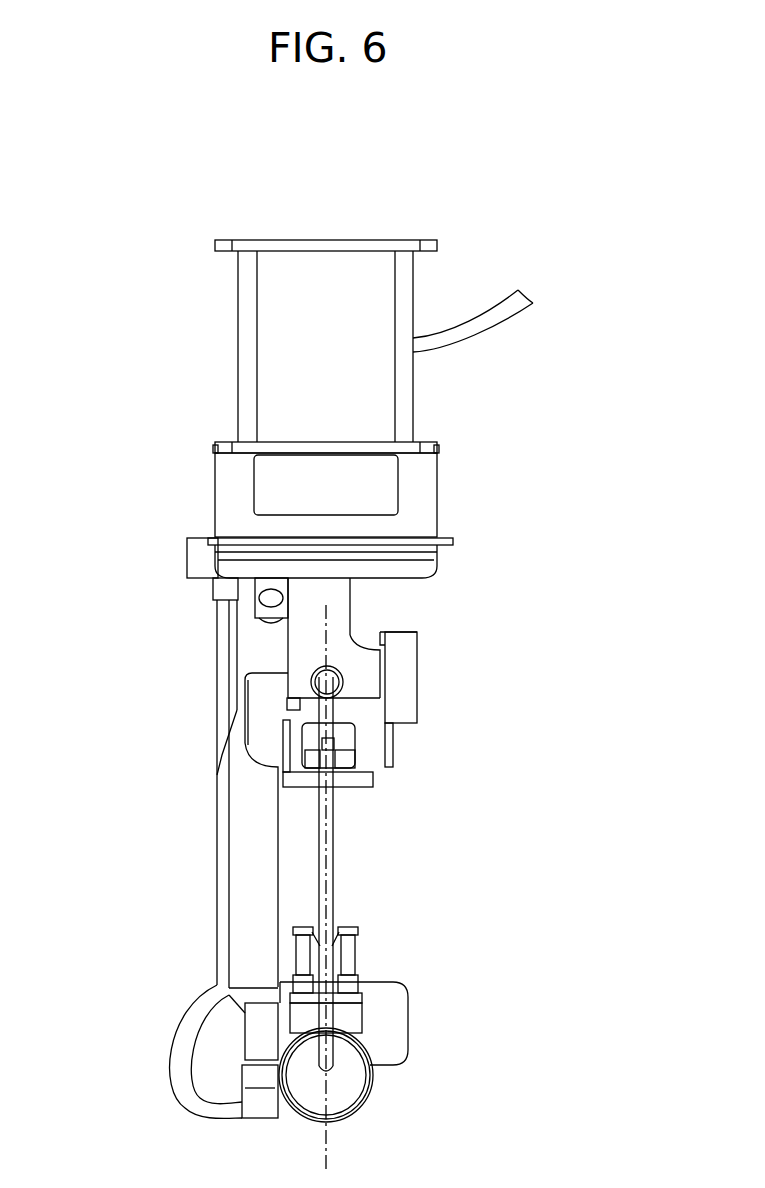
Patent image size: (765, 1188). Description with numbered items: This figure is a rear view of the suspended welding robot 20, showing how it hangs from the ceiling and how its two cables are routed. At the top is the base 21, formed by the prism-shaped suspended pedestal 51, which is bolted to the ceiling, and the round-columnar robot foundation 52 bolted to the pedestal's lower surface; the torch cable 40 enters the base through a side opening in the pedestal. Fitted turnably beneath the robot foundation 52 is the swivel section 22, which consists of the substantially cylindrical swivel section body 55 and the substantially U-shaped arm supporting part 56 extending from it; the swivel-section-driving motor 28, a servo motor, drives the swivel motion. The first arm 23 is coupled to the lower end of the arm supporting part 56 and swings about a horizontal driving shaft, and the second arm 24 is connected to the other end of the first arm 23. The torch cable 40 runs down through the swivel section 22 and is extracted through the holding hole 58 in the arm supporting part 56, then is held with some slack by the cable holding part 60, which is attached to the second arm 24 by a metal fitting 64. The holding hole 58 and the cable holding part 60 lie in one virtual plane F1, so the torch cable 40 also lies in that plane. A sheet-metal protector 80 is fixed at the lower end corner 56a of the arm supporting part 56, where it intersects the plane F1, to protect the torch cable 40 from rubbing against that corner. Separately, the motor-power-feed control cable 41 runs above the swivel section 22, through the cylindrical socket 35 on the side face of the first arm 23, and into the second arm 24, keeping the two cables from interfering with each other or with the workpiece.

The suspended welding robot 20 is at (530, 170).
The base 21 is at (85, 352).
The suspended pedestal 51 is at (238, 363).
The robot foundation 52 is at (233, 488).
The torch cable 40 is at (500, 312).
The swivel section 22 is at (557, 553).
The swivel section body 55 is at (398, 597).
The arm supporting part 56 is at (333, 662).
The holding hole 58 is at (340, 682).
The swivel-section-driving motor 28 is at (403, 707).
The protector 80 is at (362, 745).
The lower end corner 56a is at (380, 765).
The motor-power-feed control cable 41 is at (228, 636).
The first arm 23 is at (253, 790).
The socket 35 is at (220, 808).
The cable holding part 60 is at (372, 941).
The metal fitting 64 is at (347, 1020).
The second arm 24 is at (347, 1093).
The virtual plane F1 is at (328, 1152).